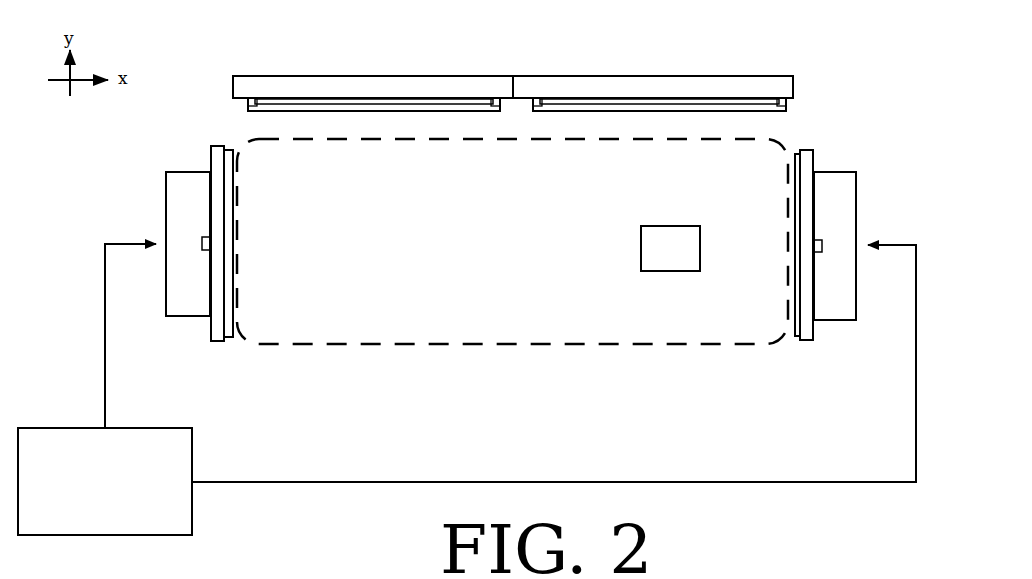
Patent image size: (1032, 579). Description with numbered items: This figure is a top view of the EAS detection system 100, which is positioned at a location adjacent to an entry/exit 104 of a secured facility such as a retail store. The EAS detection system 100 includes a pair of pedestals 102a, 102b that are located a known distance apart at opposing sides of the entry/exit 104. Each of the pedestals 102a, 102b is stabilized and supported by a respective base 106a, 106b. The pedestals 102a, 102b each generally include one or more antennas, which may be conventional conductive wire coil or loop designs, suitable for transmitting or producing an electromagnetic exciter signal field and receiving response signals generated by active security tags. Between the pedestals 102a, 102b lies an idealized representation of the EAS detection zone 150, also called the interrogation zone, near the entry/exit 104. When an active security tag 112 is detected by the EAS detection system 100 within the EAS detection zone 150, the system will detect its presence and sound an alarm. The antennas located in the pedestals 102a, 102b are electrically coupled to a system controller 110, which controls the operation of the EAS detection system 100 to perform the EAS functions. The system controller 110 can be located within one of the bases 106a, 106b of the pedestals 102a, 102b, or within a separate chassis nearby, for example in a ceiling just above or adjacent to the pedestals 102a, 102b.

The EAS detection system 100 is at (850, 62).
The entry/exit 104 is at (700, 63).
The base 106a is at (166, 185).
The base 106b is at (840, 172).
The pedestal 102a is at (211, 322).
The pedestal 102b is at (813, 325).
The security tag 112 is at (670, 248).
The EAS detection zone 150 is at (554, 346).
The system controller 110 is at (467, 389).